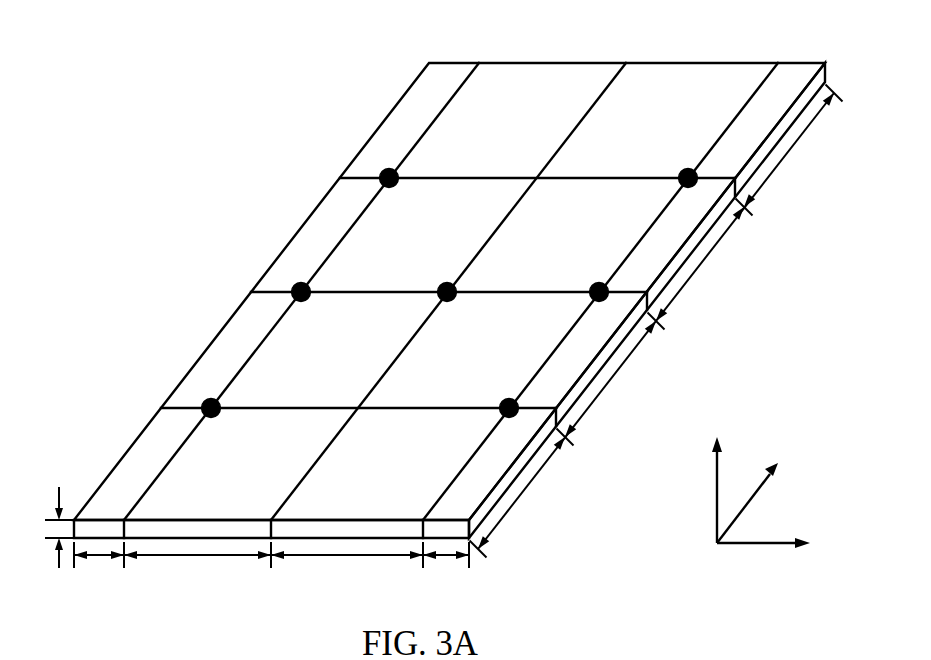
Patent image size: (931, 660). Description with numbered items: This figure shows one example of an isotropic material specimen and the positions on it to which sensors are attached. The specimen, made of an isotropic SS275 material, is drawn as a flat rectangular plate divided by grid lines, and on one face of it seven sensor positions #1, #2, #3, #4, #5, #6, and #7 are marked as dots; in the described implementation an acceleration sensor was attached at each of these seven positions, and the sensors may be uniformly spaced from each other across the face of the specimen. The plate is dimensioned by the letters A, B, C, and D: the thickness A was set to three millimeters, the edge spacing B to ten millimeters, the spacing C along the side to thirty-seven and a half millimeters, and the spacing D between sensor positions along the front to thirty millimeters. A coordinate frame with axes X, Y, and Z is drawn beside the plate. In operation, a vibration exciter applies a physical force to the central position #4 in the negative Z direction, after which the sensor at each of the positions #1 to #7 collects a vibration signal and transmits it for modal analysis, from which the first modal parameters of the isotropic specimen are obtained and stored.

The position # 1 is at (213, 423).
The position # 2 is at (312, 302).
The position # 3 is at (400, 187).
The position # 4 is at (458, 302).
The position # 5 is at (509, 423).
The position # 6 is at (606, 302).
The position # 7 is at (693, 188).
The dimension A is at (50, 527).
The dimension B is at (271, 571).
The dimension C is at (656, 321).
The dimension D is at (273, 571).
The X axis X is at (765, 529).
The Y axis Y is at (760, 487).
The Z axis Z is at (725, 483).